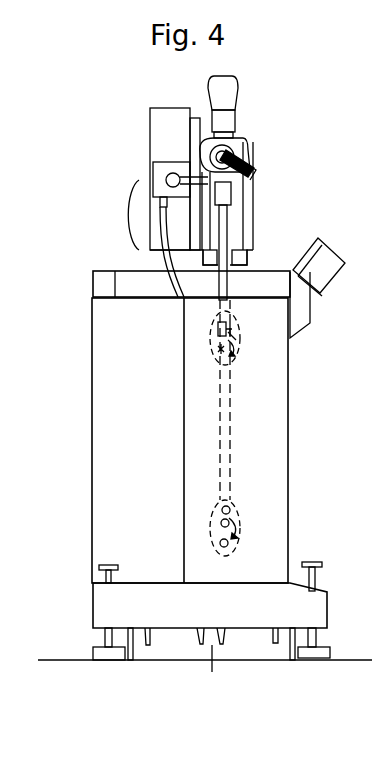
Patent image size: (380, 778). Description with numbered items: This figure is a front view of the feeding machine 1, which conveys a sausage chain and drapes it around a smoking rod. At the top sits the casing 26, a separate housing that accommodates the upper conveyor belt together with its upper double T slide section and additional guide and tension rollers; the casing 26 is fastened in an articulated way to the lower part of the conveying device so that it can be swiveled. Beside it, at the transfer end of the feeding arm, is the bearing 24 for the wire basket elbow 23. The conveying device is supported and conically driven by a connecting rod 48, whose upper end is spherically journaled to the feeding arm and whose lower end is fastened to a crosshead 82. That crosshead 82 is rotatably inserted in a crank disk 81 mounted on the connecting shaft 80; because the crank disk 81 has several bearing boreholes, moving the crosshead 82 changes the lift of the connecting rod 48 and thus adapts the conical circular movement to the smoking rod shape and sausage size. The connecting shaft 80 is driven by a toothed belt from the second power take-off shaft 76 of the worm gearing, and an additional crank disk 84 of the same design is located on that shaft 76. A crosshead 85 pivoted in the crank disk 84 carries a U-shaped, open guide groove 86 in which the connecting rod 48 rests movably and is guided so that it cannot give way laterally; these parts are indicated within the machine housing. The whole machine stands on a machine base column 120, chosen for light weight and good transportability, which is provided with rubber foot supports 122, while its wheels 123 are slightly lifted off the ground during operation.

The feeding machine 1 is at (115, 205).
The wire basket elbow 23 is at (245, 168).
The bearing 24 is at (233, 148).
The casing 26 is at (165, 135).
The connecting rod 48 is at (223, 228).
The second power take-off shaft 76 is at (240, 360).
The connecting shaft 80 is at (240, 545).
The crank disk 81 is at (246, 516).
The crosshead 82 is at (296, 526).
The additional crank disk 84 is at (246, 337).
The crosshead 85 is at (295, 348).
The guide groove 86 is at (300, 361).
The machine base column 120 is at (287, 605).
The foot supports 122 is at (317, 648).
The wheels 123 is at (285, 638).